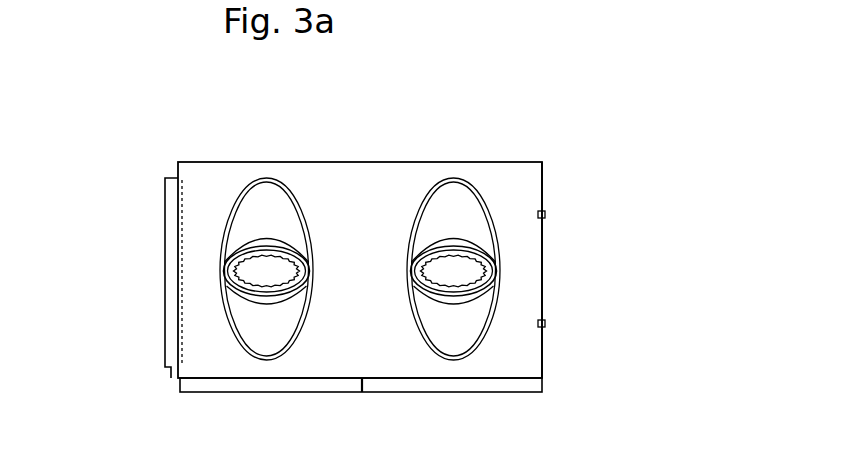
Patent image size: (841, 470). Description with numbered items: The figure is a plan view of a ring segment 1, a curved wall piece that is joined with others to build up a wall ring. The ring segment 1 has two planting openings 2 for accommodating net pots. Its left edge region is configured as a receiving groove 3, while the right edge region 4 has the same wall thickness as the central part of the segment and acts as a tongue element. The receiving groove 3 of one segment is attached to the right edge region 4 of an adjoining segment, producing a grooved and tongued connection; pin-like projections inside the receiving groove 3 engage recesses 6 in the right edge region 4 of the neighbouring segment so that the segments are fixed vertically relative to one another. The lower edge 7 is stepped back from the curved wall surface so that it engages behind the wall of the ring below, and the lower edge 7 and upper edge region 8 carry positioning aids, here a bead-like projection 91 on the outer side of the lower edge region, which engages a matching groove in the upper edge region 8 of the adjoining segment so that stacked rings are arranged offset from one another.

The ring segment 1 is at (488, 108).
The planting opening 2 is at (265, 274).
The receiving groove 3 is at (165, 213).
The right edge region 4 is at (542, 193).
The recess 6 is at (545, 215).
The lower edge 7 is at (500, 385).
The upper edge region 8 is at (360, 163).
The bead-like projection 91 is at (360, 392).